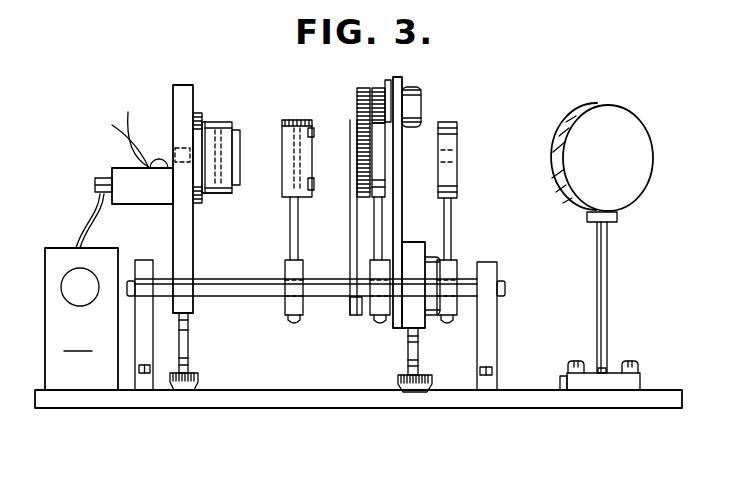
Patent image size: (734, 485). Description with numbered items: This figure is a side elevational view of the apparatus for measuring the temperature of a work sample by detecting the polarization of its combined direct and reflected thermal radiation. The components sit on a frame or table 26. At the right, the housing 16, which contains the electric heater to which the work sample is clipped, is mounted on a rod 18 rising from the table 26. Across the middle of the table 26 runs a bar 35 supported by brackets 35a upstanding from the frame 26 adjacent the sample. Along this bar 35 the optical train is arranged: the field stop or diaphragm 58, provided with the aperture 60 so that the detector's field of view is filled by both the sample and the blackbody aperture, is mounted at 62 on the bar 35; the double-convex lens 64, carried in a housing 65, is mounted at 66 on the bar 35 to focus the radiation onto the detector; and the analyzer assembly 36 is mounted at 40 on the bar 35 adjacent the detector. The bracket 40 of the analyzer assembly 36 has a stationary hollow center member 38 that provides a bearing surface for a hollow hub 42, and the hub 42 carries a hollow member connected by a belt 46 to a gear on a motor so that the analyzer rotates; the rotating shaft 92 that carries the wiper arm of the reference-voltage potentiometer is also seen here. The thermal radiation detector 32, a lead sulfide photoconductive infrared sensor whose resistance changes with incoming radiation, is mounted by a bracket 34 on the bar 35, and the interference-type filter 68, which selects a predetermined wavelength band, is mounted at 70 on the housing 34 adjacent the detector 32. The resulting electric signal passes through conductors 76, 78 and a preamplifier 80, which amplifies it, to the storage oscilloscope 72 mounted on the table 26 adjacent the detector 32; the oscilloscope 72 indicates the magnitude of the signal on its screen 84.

The housing 16 is at (653, 152).
The rod 18 is at (609, 296).
The frame or table 26 is at (519, 391).
The detector 32 is at (167, 153).
The bracket 34 is at (194, 264).
The bar 35 is at (247, 278).
The brackets 35a is at (145, 260).
The analyzer assembly 36 is at (378, 221).
The stationary hollow center member 38 is at (378, 202).
The bracket 40 is at (373, 313).
The hollow hub 42 is at (372, 186).
The belt 46 is at (353, 150).
The field stop or diaphragm 58 is at (446, 122).
The aperture 60 is at (455, 156).
The mounting of field stop 62 is at (452, 312).
The lens 64 is at (288, 118).
The housing 65 is at (283, 198).
The mounting of lens housing 66 is at (283, 307).
The filter 68 is at (218, 124).
The mounting of filter 70 is at (226, 196).
The oscilloscope 72 is at (81, 319).
The conductor 76 is at (79, 233).
The conductor 78 is at (92, 233).
The preamplifier 80 is at (125, 178).
The screen 84 is at (88, 270).
The rotating shaft 92 is at (397, 77).